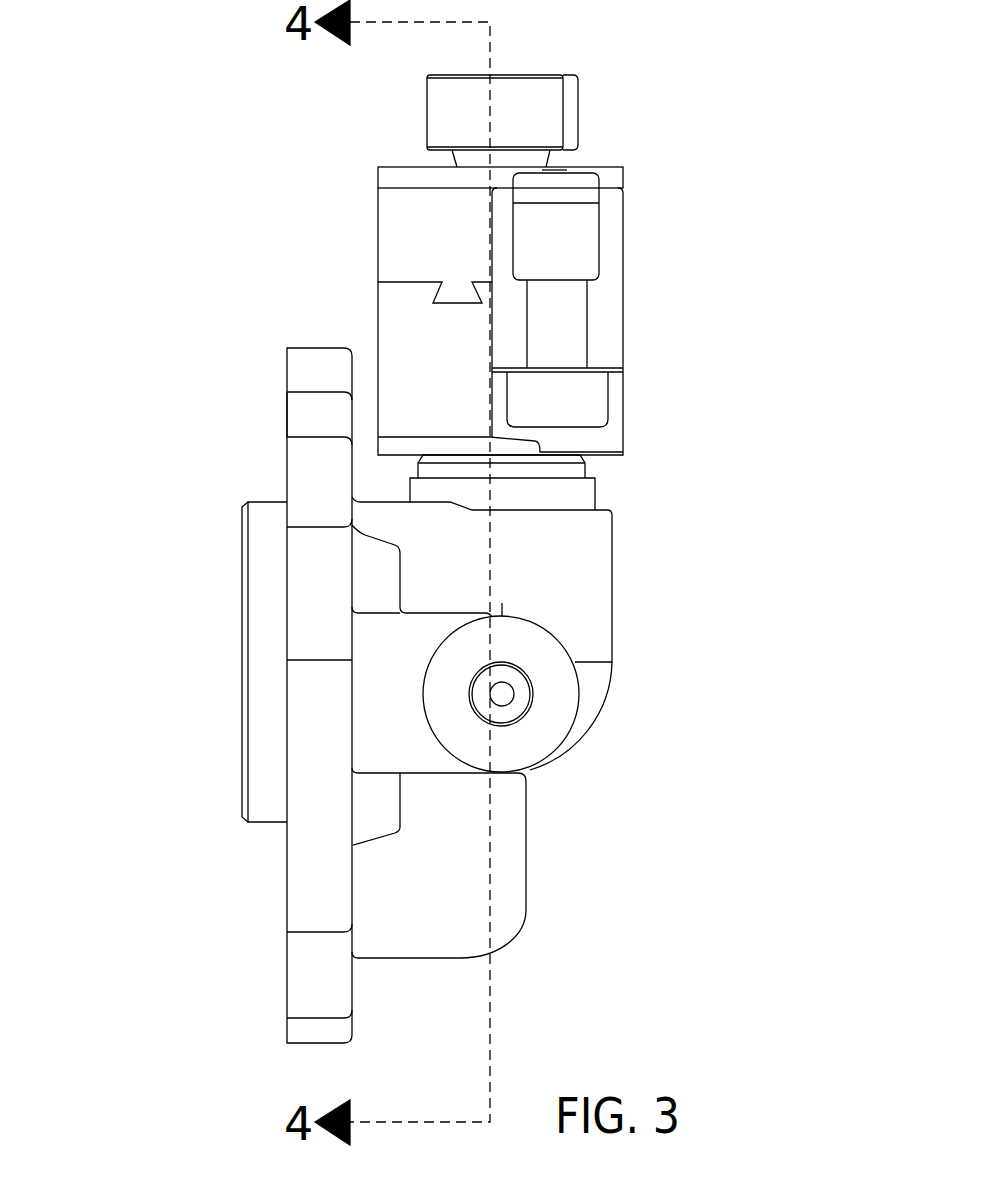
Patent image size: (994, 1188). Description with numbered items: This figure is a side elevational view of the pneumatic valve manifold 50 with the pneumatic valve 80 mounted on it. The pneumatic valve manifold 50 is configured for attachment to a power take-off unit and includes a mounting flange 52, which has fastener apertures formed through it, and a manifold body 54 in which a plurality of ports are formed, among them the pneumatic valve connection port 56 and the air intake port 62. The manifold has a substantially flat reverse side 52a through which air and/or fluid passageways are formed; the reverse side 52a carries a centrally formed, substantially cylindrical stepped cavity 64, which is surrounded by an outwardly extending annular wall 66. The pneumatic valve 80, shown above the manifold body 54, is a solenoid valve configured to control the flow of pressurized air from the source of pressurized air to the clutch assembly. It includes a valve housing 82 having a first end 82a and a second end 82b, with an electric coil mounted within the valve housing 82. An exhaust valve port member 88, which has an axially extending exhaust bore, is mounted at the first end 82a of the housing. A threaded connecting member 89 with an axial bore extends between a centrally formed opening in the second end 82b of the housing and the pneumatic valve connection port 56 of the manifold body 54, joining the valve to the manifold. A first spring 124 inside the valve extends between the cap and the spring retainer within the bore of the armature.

The pneumatic valve manifold 50 is at (132, 54).
The mounting flange 52 is at (295, 365).
The reverse side 52a is at (287, 415).
The manifold body 54 is at (603, 677).
The pneumatic valve connection port 56 is at (557, 510).
The air intake port 62 is at (510, 713).
The stepped cavity 64 is at (230, 658).
The annular wall 66 is at (268, 510).
The pneumatic valve 80 is at (718, 165).
The valve housing 82 is at (635, 249).
The first end 82a is at (623, 172).
The second end 82b is at (617, 445).
The exhaust valve port member 88 is at (573, 87).
The threaded connecting member 89 is at (593, 482).
The first spring 124 is at (583, 264).